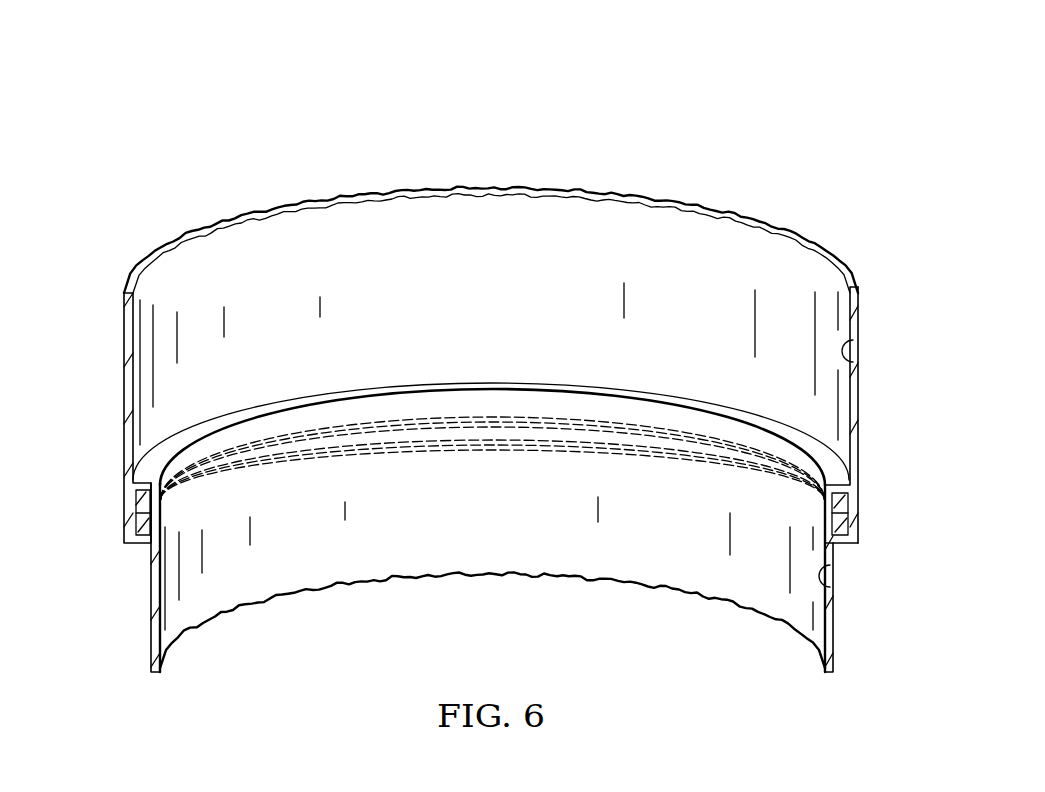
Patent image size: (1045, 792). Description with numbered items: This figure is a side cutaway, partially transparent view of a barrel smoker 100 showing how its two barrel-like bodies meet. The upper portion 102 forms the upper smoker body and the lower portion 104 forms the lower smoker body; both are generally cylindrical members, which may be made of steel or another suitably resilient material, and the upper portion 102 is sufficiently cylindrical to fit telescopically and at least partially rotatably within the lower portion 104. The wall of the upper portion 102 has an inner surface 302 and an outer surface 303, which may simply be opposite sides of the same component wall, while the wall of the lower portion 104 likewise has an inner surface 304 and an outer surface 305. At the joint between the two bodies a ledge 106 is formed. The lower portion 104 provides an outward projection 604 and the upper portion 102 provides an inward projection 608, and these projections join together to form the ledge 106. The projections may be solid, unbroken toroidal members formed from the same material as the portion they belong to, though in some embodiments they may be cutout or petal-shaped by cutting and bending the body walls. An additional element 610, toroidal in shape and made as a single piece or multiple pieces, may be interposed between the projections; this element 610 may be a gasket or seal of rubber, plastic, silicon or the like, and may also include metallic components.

The barrel smoker 100 is at (749, 193).
The upper portion 102 is at (120, 330).
The lower portion 104 is at (144, 656).
The ledge 106 is at (868, 485).
The inner surface 302 is at (859, 362).
The outer surface 303 is at (859, 405).
The inner surface 304 is at (834, 583).
The outer surface 305 is at (838, 632).
The outward projection 604 is at (701, 466).
The inward projection 608 is at (689, 402).
The element 610 is at (139, 497).